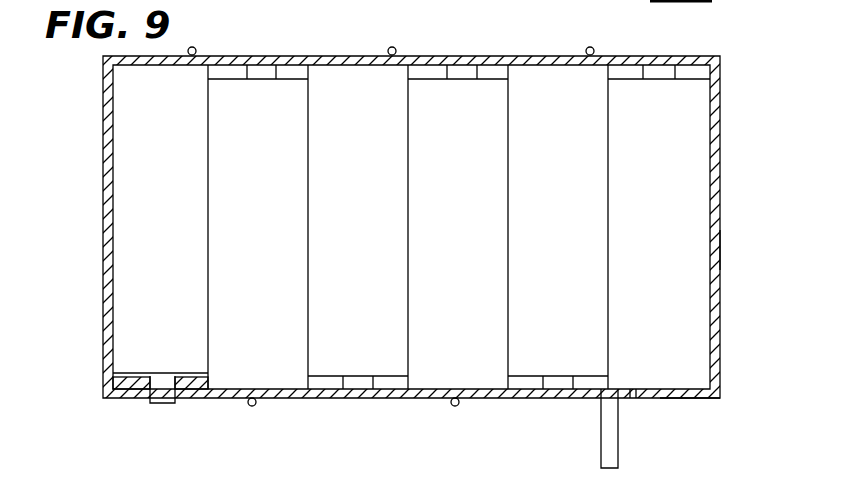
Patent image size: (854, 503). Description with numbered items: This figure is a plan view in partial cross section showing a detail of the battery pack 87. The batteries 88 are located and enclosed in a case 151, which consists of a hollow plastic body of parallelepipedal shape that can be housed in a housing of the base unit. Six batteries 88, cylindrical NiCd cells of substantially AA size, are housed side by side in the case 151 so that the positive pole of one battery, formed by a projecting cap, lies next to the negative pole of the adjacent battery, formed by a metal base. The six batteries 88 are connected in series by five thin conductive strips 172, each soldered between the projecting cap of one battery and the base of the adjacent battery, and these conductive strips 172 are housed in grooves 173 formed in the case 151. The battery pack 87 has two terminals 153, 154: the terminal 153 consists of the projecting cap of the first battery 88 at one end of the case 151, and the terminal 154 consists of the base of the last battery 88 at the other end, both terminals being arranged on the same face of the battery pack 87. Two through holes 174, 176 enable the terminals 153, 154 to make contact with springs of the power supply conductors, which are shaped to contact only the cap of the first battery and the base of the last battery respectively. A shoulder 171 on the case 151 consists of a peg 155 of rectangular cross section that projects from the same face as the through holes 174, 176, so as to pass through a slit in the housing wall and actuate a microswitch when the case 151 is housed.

The battery pack 87 is at (722, 116).
The batteries 88 is at (222, 313).
The case 151 is at (722, 254).
The terminal 153 is at (168, 399).
The terminal 154 is at (672, 398).
The peg 155 is at (606, 418).
The shoulder 171 is at (608, 468).
The conductive strips 172 is at (193, 55).
The grooves 173 is at (150, 64).
The through hole 174 is at (148, 391).
The through hole 176 is at (642, 398).